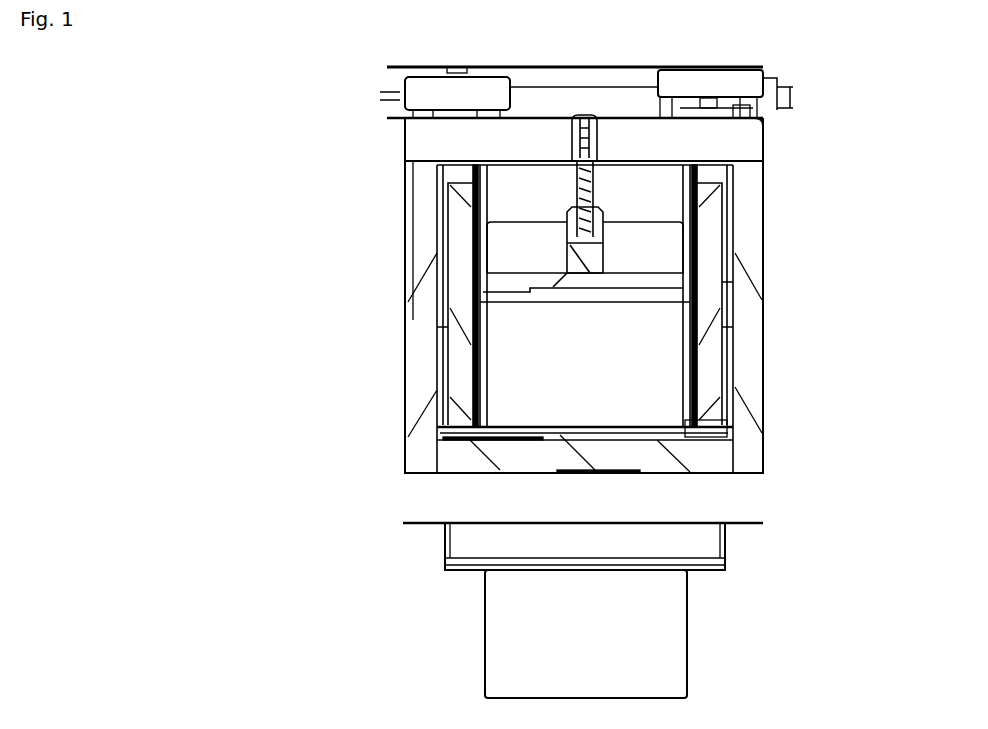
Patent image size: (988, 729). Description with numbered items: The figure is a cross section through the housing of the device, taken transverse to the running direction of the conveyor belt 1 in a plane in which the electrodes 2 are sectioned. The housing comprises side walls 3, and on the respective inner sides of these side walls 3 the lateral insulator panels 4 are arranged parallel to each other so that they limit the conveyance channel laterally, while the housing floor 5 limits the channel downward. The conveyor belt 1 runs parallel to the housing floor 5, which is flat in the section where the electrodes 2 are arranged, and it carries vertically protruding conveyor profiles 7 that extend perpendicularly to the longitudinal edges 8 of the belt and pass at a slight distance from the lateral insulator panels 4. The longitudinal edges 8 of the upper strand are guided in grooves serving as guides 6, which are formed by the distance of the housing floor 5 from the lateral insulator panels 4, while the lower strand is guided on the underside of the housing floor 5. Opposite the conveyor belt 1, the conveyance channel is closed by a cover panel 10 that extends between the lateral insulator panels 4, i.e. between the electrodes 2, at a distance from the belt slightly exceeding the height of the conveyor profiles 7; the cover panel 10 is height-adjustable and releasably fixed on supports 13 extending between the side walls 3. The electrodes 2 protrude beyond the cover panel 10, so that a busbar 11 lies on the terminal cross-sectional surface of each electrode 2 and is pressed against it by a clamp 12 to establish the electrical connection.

The conveyor belt 1 is at (692, 431).
The electrode 2 is at (456, 289).
The side wall 3 is at (418, 384).
The lateral insulator panel 4 is at (441, 347).
The housing floor 5 is at (657, 459).
The guide 6 is at (453, 431).
The conveyor profile 7 is at (586, 409).
The longitudinal edge 8 is at (441, 442).
The cover panel 10 is at (508, 277).
The busbar 11 is at (385, 108).
The clamp 12 is at (423, 96).
The support 13 is at (524, 139).